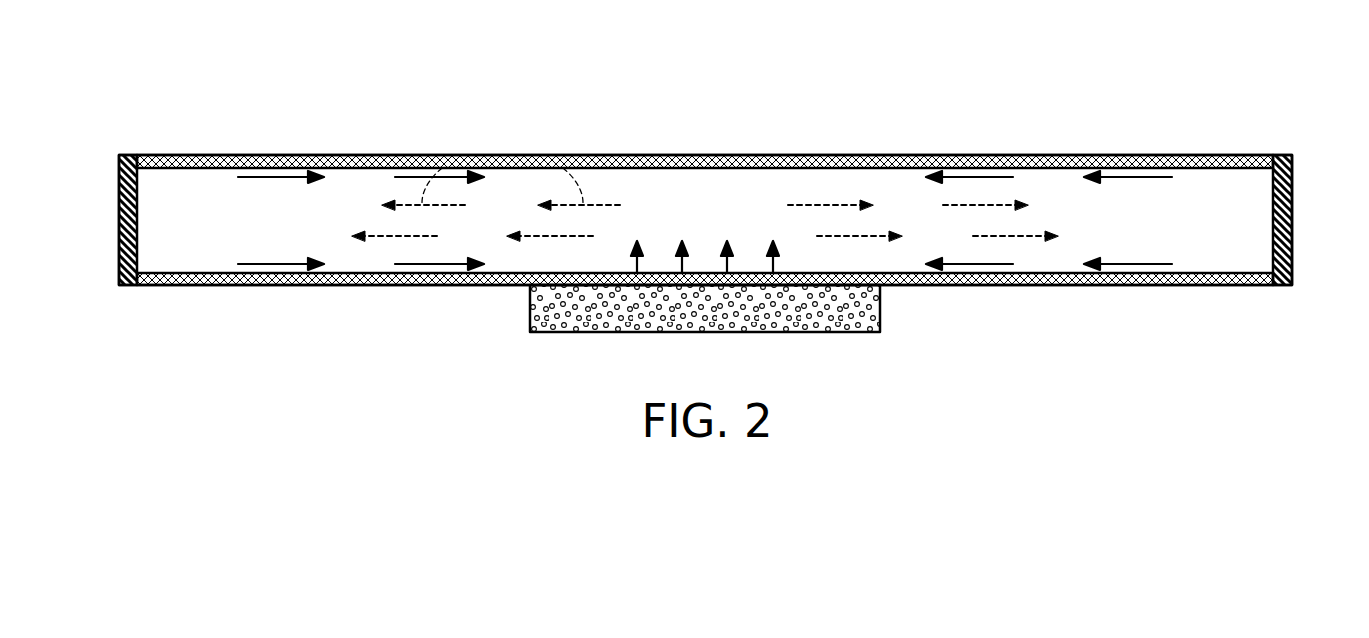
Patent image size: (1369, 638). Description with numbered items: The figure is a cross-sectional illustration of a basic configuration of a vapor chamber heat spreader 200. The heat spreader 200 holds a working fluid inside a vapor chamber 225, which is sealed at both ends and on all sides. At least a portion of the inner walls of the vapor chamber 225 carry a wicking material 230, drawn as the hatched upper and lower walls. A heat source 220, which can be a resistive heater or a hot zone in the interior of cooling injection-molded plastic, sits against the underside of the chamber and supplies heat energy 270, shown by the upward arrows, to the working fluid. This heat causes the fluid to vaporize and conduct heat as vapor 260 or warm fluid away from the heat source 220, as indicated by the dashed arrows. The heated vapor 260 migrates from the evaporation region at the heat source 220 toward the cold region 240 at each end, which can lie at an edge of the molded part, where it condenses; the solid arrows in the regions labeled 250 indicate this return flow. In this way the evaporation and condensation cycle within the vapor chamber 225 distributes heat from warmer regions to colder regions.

The heat spreader 200 is at (202, 131).
The heat source 220 is at (715, 332).
The vapor chamber 225 is at (335, 220).
The wicking material 230 is at (726, 155).
The cold region 240 is at (120, 220).
The condenser region 250 is at (265, 177).
The vapor 260 is at (470, 155).
The heat energy 270 is at (705, 247).